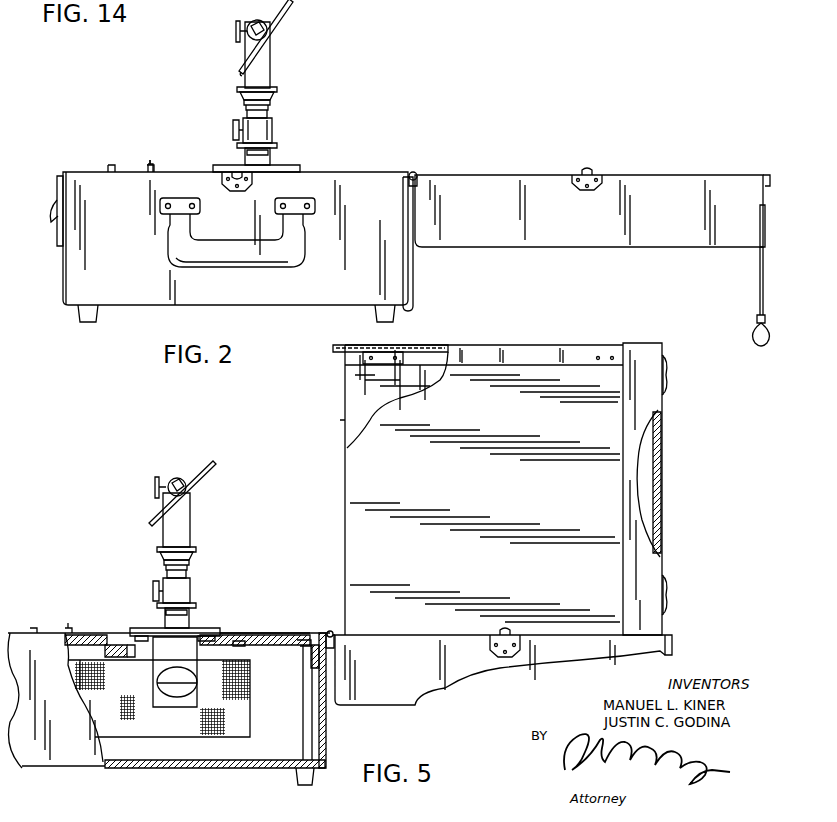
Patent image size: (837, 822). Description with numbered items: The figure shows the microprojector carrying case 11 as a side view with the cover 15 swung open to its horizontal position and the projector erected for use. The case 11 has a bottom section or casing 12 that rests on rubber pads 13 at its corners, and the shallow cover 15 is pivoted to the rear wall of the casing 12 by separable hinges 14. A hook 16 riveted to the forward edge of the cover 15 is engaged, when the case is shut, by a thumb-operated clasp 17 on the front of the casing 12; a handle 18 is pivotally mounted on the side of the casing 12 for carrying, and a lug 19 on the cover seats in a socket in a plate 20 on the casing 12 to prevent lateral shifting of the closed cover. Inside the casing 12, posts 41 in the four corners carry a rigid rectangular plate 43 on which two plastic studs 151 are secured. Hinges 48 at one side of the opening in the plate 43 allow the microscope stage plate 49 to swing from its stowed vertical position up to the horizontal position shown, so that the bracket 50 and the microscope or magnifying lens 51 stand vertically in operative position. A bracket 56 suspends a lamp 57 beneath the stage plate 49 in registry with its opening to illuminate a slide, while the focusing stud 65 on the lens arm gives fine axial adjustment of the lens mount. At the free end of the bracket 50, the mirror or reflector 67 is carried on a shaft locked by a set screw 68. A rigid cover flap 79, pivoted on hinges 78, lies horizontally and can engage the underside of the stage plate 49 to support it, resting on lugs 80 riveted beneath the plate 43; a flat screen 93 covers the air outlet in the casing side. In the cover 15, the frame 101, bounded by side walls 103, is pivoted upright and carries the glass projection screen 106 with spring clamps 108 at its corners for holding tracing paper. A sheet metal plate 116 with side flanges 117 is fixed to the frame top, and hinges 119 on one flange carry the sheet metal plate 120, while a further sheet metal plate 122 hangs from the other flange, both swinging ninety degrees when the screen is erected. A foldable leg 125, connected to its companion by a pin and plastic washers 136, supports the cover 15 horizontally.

In FIG. 2, the microprojector carrying case 11 is at (402, 138).
In FIG. 5, the microprojector carrying case 11 is at (299, 549).
In FIG. 2, the bottom section or casing 12 is at (410, 284).
In FIG. 5, the bottom section or casing 12 is at (327, 742).
In FIG. 2, the rubber pads 13 is at (98, 315).
In FIG. 5, the rubber pads 13 is at (296, 781).
In FIG. 2, the separable hinges 14 is at (417, 174).
In FIG. 5, the separable hinges 14 is at (331, 630).
In FIG. 2, the cover 15 is at (512, 175).
In FIG. 14, the cover 15 is at (420, 698).
In FIG. 2, the hook 16 is at (767, 174).
In FIG. 2, the thumb-operated clasp 17 is at (56, 240).
In FIG. 2, the handle 18 is at (226, 258).
In FIG. 2, the lug 19 is at (590, 172).
In FIG. 14, the lug 19 is at (500, 630).
In FIG. 2, the plate 20 is at (250, 181).
In FIG. 5, the posts 41 is at (303, 740).
In FIG. 5, the rigid rectangular plate 43 is at (90, 632).
In FIG. 5, the hinges 48 is at (121, 663).
In FIG. 2, the microscope stage plate 49 is at (299, 168).
In FIG. 5, the microscope stage plate 49 is at (140, 628).
In FIG. 2, the bracket 50 is at (272, 71).
In FIG. 5, the bracket 50 is at (192, 532).
In FIG. 2, the microscope or magnifying lens 51 is at (280, 98).
In FIG. 5, the microscope or magnifying lens 51 is at (201, 558).
In FIG. 5, the bracket 56 is at (195, 671).
In FIG. 5, the lamp 57 is at (175, 698).
In FIG. 2, the focusing stud 65 is at (233, 130).
In FIG. 5, the focusing stud 65 is at (154, 588).
In FIG. 2, the mirror or reflector 67 is at (279, 38).
In FIG. 5, the mirror or reflector 67 is at (206, 459).
In FIG. 2, the set screw 68 is at (236, 31).
In FIG. 5, the set screw 68 is at (155, 486).
In FIG. 5, the hinges 78 is at (297, 661).
In FIG. 5, the cover flap 79 is at (255, 632).
In FIG. 5, the lugs 80 is at (241, 646).
In FIG. 5, the screen 93 is at (244, 726).
In FIG. 14, the frame 101 is at (664, 443).
In FIG. 14, the side walls 103 is at (646, 563).
In FIG. 14, the glass projection screen 106 is at (661, 493).
In FIG. 14, the spring clamps 108 is at (667, 370).
In FIG. 14, the sheet metal plate 116 is at (435, 348).
In FIG. 14, the side flanges 117 is at (540, 362).
In FIG. 14, the hinges 119 is at (383, 365).
In FIG. 14, the sheet metal plate 120 is at (345, 410).
In FIG. 14, the sheet metal plate 122 is at (345, 487).
In FIG. 2, the foldable leg 125 is at (760, 283).
In FIG. 2, the plastic washers 136 is at (763, 340).
In FIG. 2, the plastic studs 151 is at (151, 164).
In FIG. 5, the plastic studs 151 is at (68, 628).